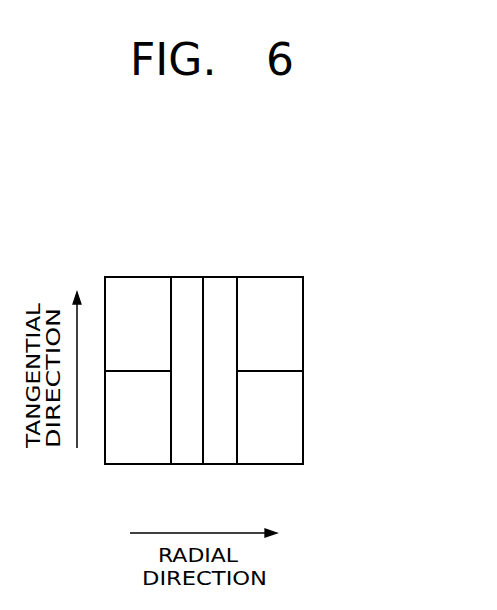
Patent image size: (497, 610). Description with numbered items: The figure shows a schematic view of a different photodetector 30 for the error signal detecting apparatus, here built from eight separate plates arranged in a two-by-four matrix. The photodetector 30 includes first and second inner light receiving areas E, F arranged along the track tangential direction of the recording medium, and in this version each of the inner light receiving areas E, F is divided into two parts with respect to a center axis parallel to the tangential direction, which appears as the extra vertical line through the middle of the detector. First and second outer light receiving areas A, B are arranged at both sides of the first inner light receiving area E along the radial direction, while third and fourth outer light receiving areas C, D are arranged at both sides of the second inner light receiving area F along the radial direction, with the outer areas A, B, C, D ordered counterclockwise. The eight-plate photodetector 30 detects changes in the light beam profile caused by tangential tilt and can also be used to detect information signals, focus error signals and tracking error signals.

The photodetector 30 is at (266, 338).
The first outer light receiving area A is at (270, 324).
The second outer light receiving area B is at (138, 324).
The third outer light receiving area C is at (138, 417).
The fourth outer light receiving area D is at (270, 417).
The first inner light receiving area E is at (188, 285).
The second inner light receiving area F is at (188, 455).